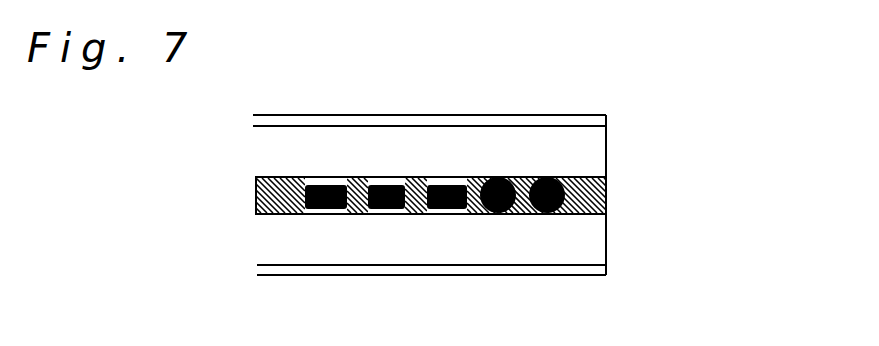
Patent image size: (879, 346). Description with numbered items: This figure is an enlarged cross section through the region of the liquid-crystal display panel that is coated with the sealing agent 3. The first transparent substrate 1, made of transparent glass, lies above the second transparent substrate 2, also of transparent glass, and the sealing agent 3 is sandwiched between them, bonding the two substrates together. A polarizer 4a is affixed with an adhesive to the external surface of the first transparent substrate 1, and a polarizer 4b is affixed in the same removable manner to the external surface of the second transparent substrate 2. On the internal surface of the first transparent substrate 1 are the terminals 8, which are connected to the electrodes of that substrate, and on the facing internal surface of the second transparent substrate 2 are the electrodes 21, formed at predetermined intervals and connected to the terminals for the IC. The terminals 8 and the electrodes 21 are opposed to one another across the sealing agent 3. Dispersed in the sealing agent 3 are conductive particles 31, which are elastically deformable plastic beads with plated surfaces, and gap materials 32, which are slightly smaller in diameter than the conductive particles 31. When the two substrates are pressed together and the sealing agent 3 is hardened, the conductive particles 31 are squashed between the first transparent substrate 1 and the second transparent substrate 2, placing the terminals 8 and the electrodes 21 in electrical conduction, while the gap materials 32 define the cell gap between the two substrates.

The first transparent substrate 1 is at (592, 153).
The second transparent substrate 2 is at (593, 243).
The sealing agent 3 is at (606, 190).
The polarizer 4a is at (581, 118).
The polarizer 4b is at (588, 270).
The terminal 8 is at (437, 177).
The electrode 21 is at (315, 215).
The conductive particle 31 is at (465, 215).
The gap material 32 is at (497, 215).